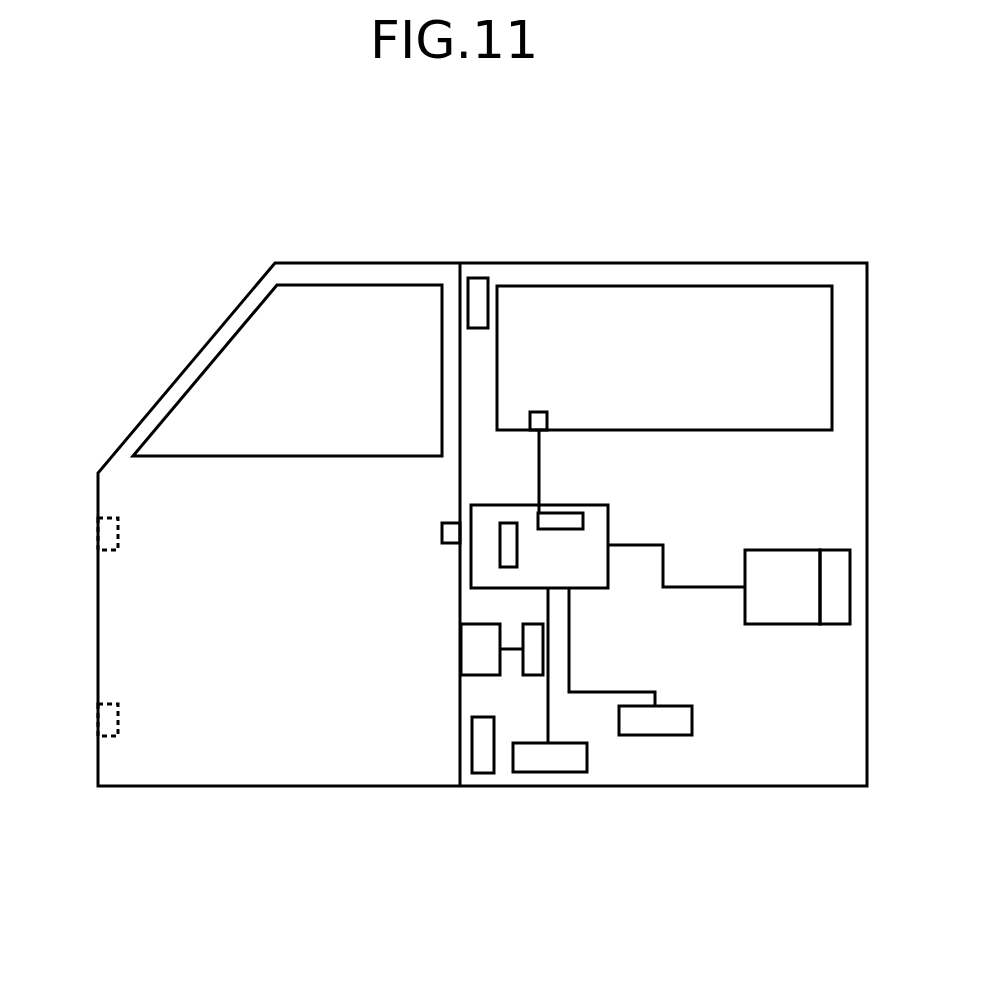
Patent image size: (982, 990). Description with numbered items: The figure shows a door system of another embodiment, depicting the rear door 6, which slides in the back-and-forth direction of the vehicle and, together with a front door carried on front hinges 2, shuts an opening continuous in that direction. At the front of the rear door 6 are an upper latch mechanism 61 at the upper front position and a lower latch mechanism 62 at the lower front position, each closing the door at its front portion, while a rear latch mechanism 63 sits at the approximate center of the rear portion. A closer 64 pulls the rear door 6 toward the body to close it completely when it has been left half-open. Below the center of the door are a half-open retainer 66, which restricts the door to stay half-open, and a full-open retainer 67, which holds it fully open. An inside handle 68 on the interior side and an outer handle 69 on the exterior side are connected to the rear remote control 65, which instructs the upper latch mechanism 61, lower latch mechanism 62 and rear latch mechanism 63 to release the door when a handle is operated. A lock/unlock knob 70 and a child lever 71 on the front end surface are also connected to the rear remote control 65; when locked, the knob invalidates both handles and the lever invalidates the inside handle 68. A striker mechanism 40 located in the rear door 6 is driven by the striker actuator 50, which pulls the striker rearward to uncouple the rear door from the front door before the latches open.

The front hinges 2 is at (96, 541).
The rear door 6 is at (645, 775).
The striker mechanism 40 is at (478, 656).
The striker actuator 50 is at (533, 668).
The upper latch mechanism 61 is at (478, 290).
The lower latch mechanism 62 is at (485, 765).
The rear latch mechanism 63 is at (840, 615).
The closer 64 is at (770, 615).
The rear remote control 65 is at (597, 578).
The half-open retainer 66 is at (555, 763).
The full-open retainer 67 is at (683, 720).
The inside handle 68 is at (508, 532).
The outer handle 69 is at (570, 514).
The lock/unlock knob 70 is at (537, 422).
The child lever 71 is at (442, 531).